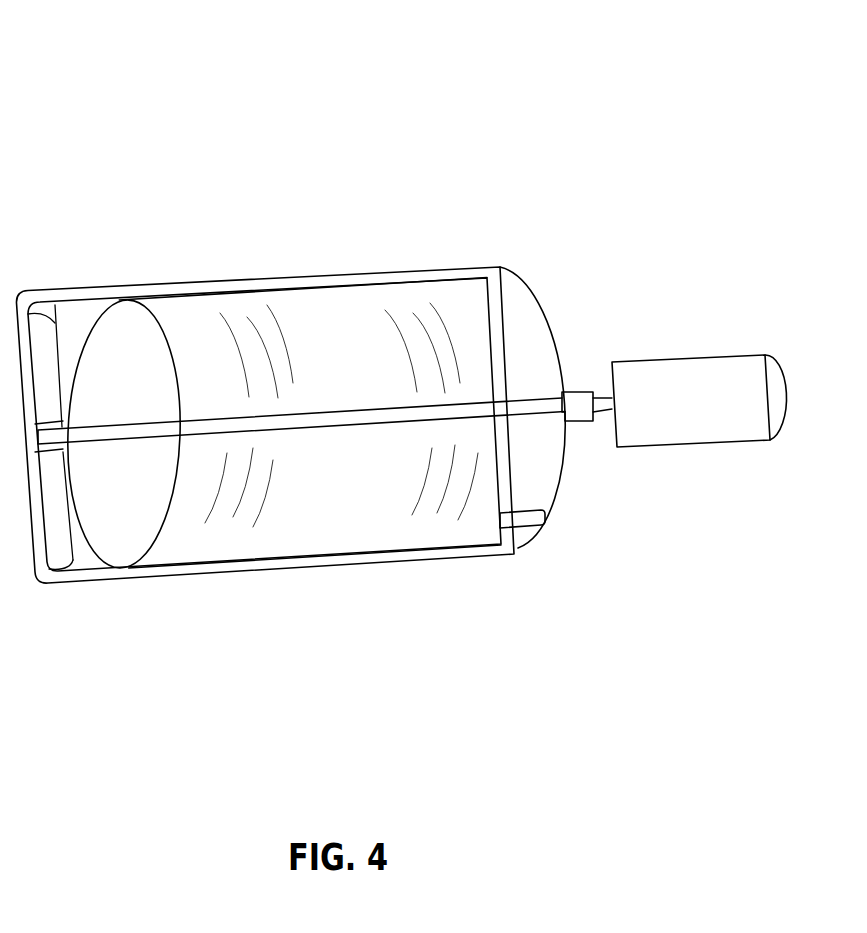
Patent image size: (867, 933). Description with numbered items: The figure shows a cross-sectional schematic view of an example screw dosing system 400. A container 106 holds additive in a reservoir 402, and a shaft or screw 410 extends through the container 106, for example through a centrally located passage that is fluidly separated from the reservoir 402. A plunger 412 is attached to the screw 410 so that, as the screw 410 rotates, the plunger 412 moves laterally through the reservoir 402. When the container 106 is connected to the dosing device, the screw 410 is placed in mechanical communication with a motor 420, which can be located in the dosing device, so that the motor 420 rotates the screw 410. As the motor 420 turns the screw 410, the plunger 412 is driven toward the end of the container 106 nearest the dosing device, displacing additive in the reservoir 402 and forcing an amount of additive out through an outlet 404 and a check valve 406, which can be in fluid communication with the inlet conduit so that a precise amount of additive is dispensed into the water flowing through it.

The screw dosing system 400 is at (128, 59).
The container 106 is at (400, 270).
The reservoir 402 is at (360, 517).
The outlet 404 is at (567, 534).
The check valve 406 is at (533, 527).
The screw 410 is at (383, 410).
The plunger 412 is at (150, 553).
The motor 420 is at (732, 443).